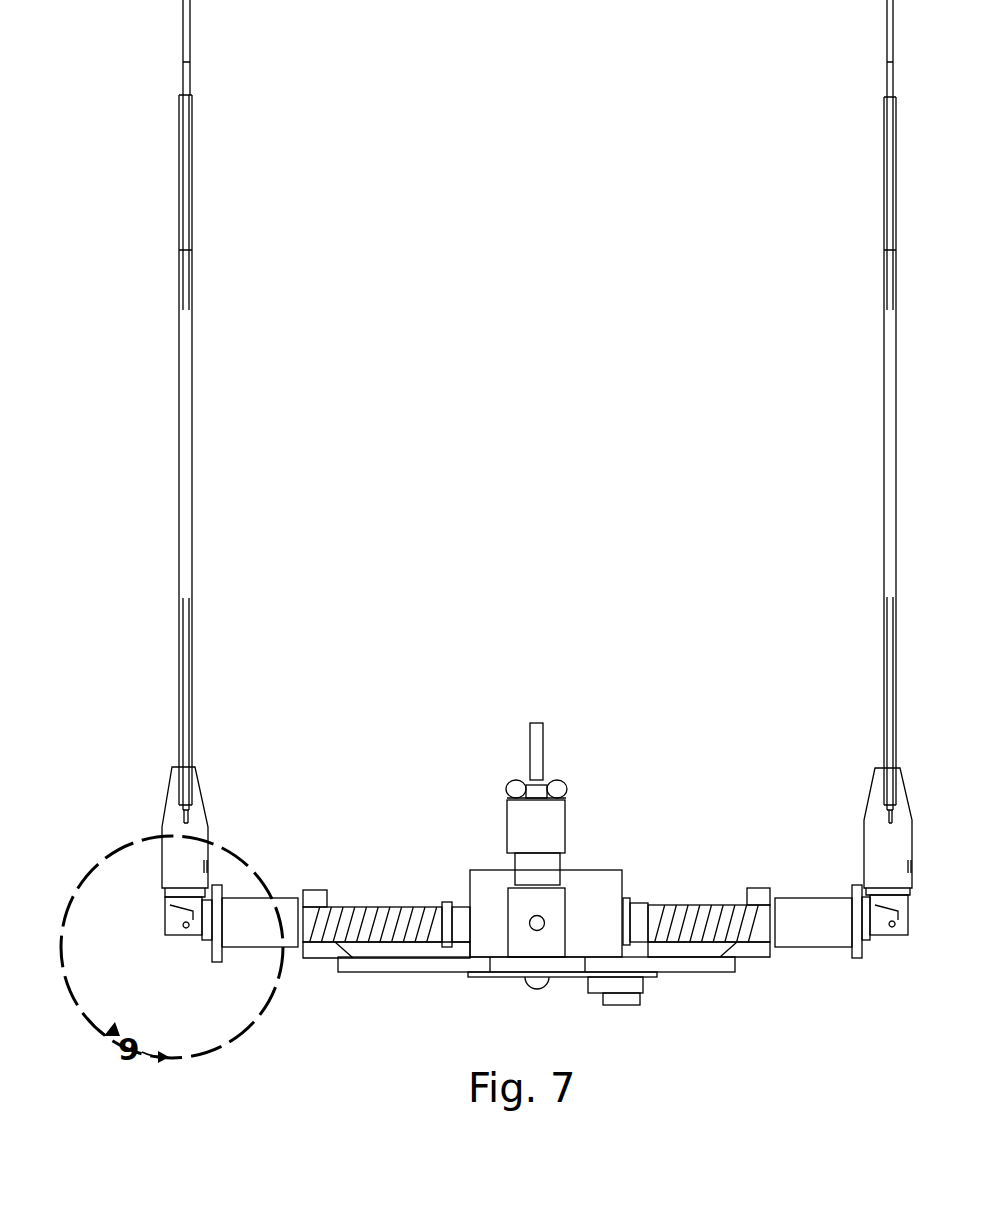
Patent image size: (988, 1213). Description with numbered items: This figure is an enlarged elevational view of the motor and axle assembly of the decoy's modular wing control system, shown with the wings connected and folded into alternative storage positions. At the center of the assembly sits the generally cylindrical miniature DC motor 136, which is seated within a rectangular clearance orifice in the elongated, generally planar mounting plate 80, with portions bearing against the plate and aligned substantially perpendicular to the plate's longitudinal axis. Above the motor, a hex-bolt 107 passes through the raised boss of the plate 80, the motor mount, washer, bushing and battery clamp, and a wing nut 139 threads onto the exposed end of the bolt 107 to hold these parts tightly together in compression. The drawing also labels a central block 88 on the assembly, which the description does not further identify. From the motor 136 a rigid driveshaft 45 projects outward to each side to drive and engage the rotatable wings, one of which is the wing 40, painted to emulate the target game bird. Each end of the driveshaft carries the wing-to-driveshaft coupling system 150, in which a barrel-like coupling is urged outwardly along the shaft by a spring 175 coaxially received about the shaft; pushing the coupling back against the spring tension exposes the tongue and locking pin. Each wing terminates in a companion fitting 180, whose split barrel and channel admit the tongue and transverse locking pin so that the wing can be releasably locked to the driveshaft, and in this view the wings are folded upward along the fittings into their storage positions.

The wing 40 is at (196, 346).
The driveshaft 45 is at (347, 888).
The mounting plate 80 is at (702, 972).
The central slide block 88 is at (508, 923).
The hex-bolt 107 is at (557, 678).
The DC motor 136 is at (588, 887).
The wing nut 139 is at (557, 781).
The wing-to-driveshaft coupling system 150 is at (123, 865).
The spring 175 is at (680, 905).
The companion fitting 180 is at (156, 922).